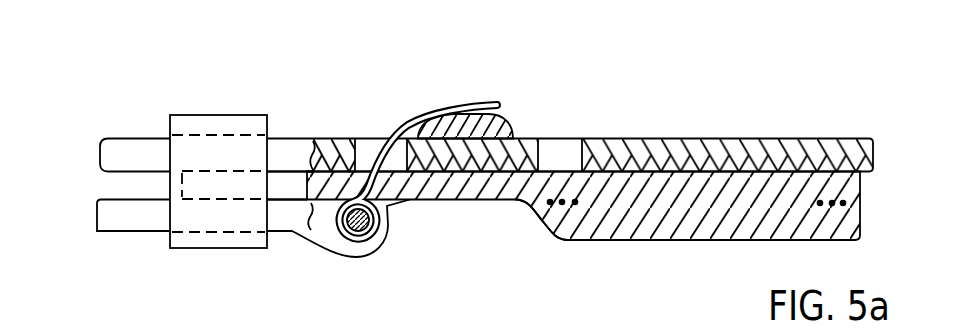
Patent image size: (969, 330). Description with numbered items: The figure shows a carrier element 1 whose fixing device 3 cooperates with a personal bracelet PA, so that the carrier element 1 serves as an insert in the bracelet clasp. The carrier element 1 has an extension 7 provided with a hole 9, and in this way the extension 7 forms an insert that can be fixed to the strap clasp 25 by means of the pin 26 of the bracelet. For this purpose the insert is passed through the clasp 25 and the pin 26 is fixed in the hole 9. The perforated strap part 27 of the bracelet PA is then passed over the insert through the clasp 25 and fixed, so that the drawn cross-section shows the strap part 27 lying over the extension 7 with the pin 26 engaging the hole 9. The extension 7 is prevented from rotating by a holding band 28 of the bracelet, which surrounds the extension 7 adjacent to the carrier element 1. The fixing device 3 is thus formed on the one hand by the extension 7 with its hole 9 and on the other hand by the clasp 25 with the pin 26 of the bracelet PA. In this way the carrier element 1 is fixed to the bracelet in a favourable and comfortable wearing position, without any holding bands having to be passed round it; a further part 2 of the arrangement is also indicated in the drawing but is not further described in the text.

The carrier element 1 is at (630, 241).
The contact carrier part 2 is at (587, 241).
The fixing device 3 is at (287, 200).
The extension 7 is at (292, 183).
The hole 9 is at (391, 191).
The strap clasp 25 is at (513, 118).
The pin 26 is at (407, 122).
The perforated strap part 27 is at (142, 143).
The holding band 28 is at (205, 241).
The personal bracelet PA is at (105, 210).